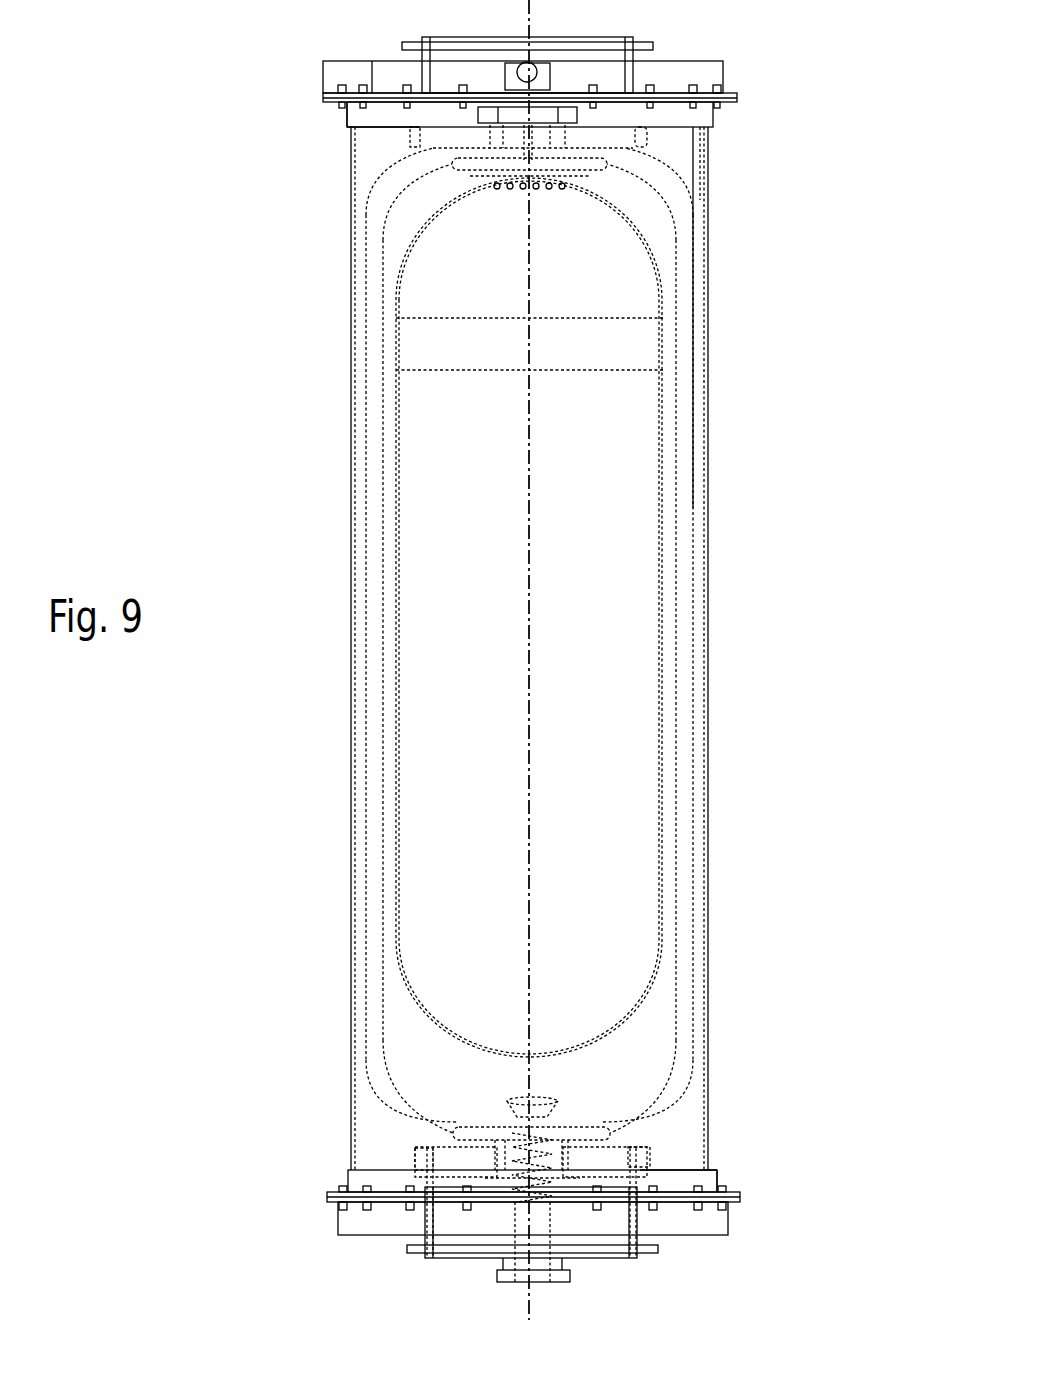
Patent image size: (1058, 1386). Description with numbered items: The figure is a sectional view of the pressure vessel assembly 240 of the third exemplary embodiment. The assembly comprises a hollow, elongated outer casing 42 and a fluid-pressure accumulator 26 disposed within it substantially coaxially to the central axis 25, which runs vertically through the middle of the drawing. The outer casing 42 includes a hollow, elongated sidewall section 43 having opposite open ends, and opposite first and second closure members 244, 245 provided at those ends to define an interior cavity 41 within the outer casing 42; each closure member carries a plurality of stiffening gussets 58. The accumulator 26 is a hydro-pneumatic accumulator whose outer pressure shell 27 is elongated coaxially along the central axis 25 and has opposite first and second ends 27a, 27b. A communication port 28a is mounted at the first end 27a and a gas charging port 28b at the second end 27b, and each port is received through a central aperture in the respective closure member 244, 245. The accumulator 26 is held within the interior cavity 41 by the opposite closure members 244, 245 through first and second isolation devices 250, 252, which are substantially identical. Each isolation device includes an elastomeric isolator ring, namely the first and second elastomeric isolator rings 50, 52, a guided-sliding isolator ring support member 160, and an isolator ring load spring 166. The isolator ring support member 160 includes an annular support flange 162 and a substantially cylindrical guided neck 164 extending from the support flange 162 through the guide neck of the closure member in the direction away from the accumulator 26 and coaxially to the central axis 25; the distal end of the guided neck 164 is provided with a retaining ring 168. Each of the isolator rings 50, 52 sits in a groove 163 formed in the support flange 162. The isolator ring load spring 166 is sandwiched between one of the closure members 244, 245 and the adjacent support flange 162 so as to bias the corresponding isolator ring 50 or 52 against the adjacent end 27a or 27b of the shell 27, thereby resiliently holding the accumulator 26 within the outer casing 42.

The central axis 25 is at (529, 622).
The fluid-pressure accumulator 26 is at (707, 508).
The outer pressure shell 27 is at (366, 606).
The first end of outer pressure shell 27a is at (640, 1130).
The second end of outer pressure shell 27b is at (622, 152).
The communication port 28a is at (497, 1276).
The gas charging port 28b is at (545, 72).
The interior cavity 41 is at (665, 160).
The outer casing 42 is at (722, 677).
The sidewall section 43 is at (360, 722).
The first elastomeric isolator ring 50 is at (618, 1136).
The second elastomeric isolator ring 52 is at (428, 137).
The stiffening gussets 58 is at (343, 1222).
The isolator ring support member 160 is at (398, 141).
The support flange 162 is at (640, 134).
The groove 163 is at (692, 173).
The guided neck 164 is at (600, 72).
The isolator ring load spring 166 is at (637, 118).
The retaining ring 168 is at (402, 46).
The pressure vessel assembly 240 is at (262, 502).
The first closure member 244 is at (738, 1212).
The second closure member 245 is at (736, 80).
The first isolation device 250 is at (664, 1180).
The second isolation device 252 is at (395, 120).